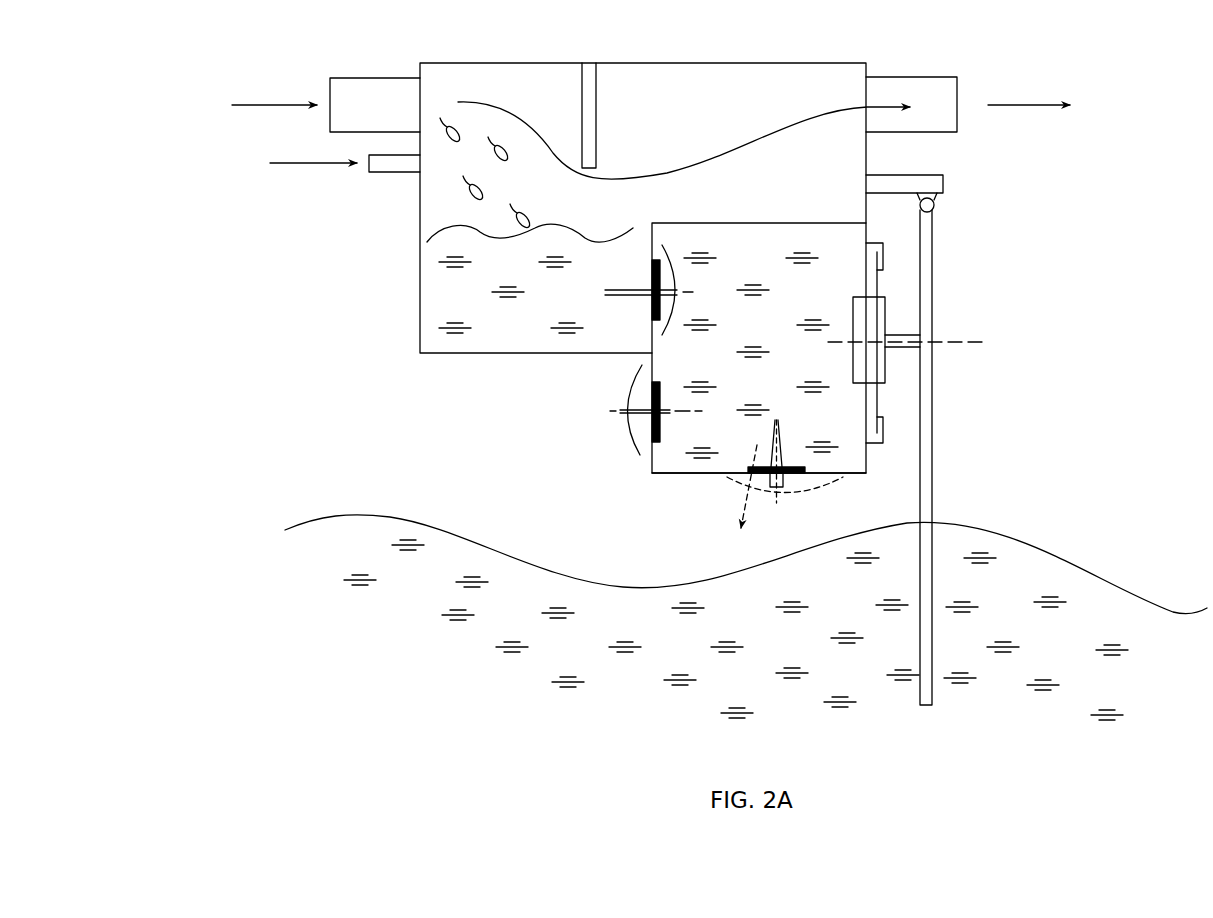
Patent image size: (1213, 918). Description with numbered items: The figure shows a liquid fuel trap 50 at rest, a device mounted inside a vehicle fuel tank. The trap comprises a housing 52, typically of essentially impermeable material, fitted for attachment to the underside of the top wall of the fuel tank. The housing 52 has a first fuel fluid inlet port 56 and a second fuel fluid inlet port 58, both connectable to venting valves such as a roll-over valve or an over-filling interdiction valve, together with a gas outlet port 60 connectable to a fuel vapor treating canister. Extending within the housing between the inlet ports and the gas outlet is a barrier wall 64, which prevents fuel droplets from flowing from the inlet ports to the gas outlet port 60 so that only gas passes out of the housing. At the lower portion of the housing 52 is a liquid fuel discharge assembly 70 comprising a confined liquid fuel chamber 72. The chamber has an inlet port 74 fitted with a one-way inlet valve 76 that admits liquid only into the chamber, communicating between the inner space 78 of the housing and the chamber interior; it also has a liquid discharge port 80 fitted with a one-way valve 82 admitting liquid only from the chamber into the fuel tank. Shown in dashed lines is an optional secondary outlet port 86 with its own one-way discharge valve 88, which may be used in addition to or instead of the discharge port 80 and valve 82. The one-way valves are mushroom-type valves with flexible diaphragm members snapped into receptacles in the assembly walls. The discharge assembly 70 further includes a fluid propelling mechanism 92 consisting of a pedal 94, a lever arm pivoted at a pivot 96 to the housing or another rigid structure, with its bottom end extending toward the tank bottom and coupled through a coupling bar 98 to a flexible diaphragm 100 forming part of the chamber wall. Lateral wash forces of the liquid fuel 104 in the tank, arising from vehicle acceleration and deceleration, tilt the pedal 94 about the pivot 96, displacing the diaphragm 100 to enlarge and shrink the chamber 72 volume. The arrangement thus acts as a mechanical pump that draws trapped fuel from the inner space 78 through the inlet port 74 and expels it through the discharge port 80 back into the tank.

The liquid fuel trap 50 is at (370, 331).
The housing 52 is at (420, 203).
The first fuel fluid inlet port 56 is at (362, 107).
The second fuel fluid inlet port 58 is at (388, 163).
The gas outlet port 60 is at (910, 97).
The barrier wall 64 is at (588, 117).
The liquid fuel discharge assembly 70 is at (775, 206).
The liquid fuel chamber 72 is at (697, 467).
The inlet port 74 is at (603, 282).
The one-way inlet valve 76 is at (663, 250).
The inner space 78 is at (513, 322).
The liquid discharge port 80 is at (660, 428).
The one-way valve 82 is at (613, 422).
The secondary outlet port 86 is at (800, 448).
The one-way discharge valve 88 is at (790, 488).
The fluid propelling mechanism 92 is at (947, 307).
The pedal 94 is at (932, 485).
The pivot 96 is at (933, 212).
The coupling bar 98 is at (905, 350).
The flexible diaphragm 100 is at (878, 402).
The liquid fuel 104 is at (1130, 600).